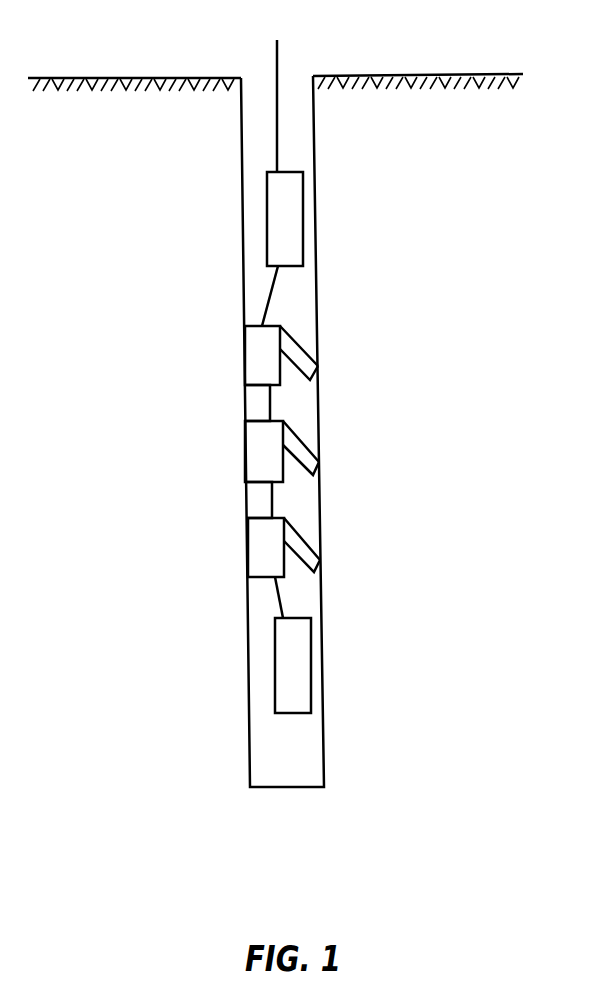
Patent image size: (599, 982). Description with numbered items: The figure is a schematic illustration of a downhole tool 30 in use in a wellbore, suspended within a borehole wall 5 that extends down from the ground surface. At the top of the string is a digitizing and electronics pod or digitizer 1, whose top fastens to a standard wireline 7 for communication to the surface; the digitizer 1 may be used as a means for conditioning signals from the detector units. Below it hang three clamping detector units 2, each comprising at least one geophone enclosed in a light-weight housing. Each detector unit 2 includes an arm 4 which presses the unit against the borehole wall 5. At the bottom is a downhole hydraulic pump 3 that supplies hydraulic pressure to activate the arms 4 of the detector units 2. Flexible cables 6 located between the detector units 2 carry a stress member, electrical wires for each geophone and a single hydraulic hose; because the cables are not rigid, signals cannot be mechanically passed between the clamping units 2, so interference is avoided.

The downhole tool 30 is at (297, 62).
The wireline 7 is at (276, 46).
The borehole wall 5 is at (318, 207).
The digitizer 1 is at (285, 219).
The flexible cables 6 is at (268, 286).
The clamping detector units 2 is at (264, 451).
The arm 4 is at (322, 368).
The downhole hydraulic pump 3 is at (293, 665).